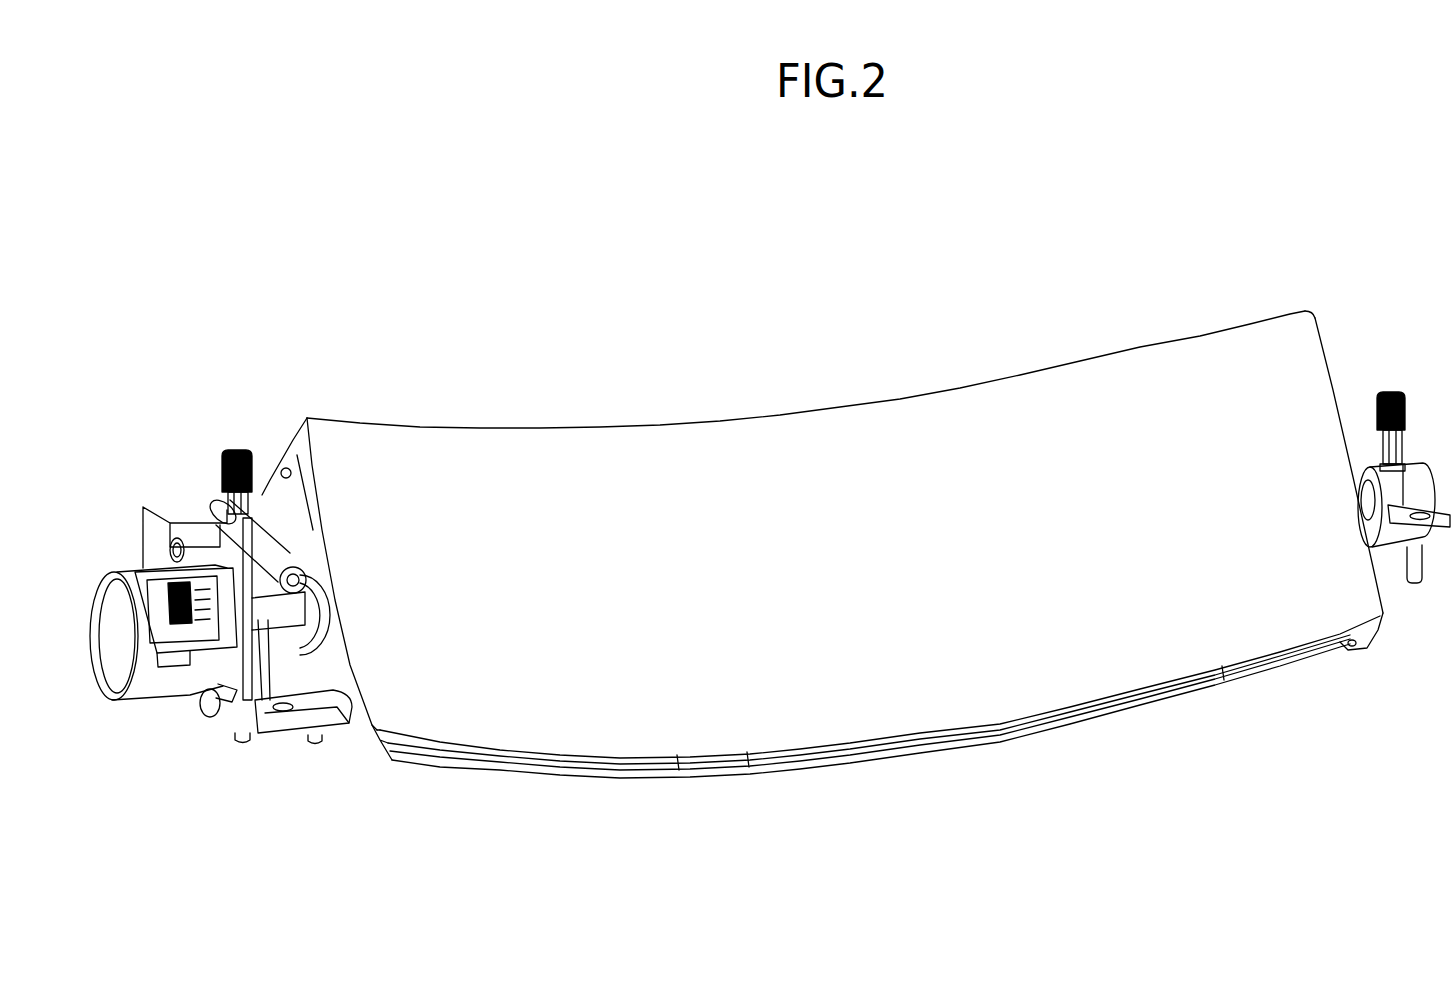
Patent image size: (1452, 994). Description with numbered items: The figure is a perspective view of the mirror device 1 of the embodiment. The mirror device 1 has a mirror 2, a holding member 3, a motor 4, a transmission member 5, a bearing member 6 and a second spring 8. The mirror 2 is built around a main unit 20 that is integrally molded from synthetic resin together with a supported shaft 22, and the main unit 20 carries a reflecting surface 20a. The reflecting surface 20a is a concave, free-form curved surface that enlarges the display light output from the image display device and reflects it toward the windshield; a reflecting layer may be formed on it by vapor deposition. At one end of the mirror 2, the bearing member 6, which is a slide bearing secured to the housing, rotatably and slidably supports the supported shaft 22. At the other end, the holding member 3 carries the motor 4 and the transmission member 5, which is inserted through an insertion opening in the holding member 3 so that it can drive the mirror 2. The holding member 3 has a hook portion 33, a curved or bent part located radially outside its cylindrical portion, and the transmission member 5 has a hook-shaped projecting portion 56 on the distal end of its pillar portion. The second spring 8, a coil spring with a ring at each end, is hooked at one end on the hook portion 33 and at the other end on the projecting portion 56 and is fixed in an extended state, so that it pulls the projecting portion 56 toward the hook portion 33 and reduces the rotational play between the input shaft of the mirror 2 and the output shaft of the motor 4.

The mirror device 1 is at (540, 229).
The mirror 2 is at (690, 290).
The main unit 20 is at (819, 409).
The reflecting surface 20a is at (940, 490).
The supported shaft 22 is at (1380, 597).
The holding member 3 is at (163, 496).
The motor 4 is at (117, 566).
The transmission member 5 is at (237, 527).
The bearing member 6 is at (1412, 455).
The second spring 8 is at (303, 562).
The hook portion 33 is at (279, 524).
The projecting portion 56 is at (300, 483).